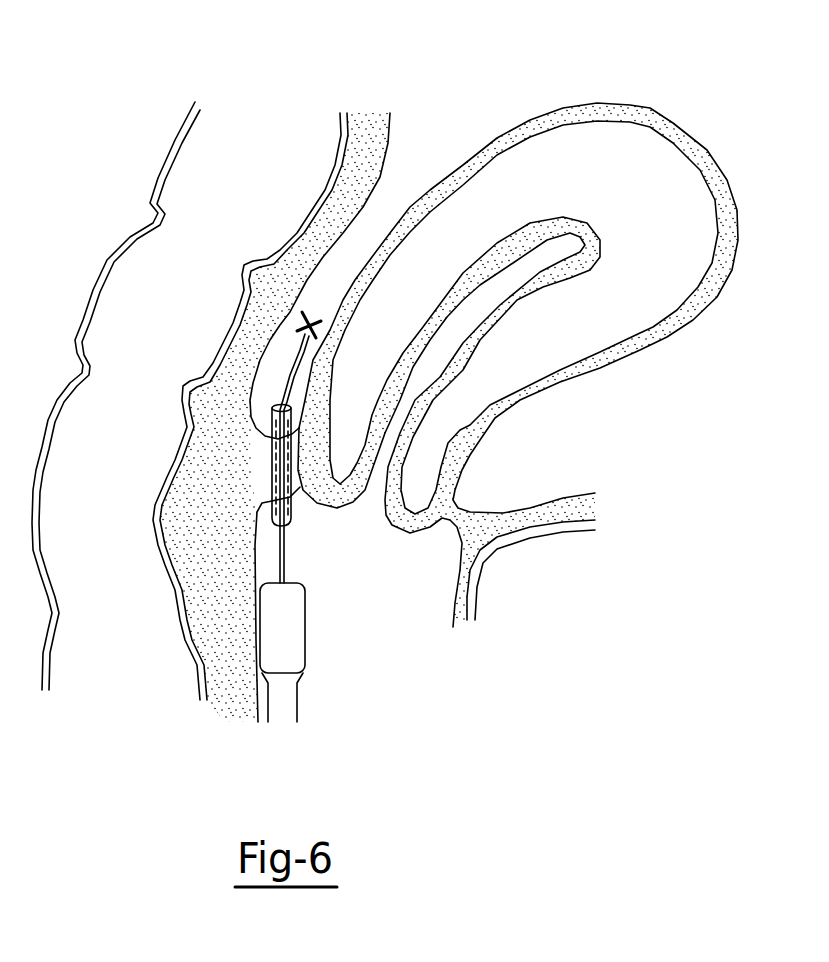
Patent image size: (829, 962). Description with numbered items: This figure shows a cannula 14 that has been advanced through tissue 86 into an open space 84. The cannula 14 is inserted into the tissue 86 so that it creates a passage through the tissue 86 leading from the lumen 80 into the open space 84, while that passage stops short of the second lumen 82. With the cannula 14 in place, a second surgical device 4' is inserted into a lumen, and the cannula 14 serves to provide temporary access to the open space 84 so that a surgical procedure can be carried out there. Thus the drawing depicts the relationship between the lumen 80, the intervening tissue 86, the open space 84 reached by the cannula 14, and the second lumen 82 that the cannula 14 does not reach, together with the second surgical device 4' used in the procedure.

The cannula 14 is at (272, 409).
The tissue 86 is at (272, 471).
The second surgical device 4' is at (323, 652).
The lumen 80 is at (412, 618).
The second lumen 82 is at (120, 677).
The open space 84 is at (430, 137).